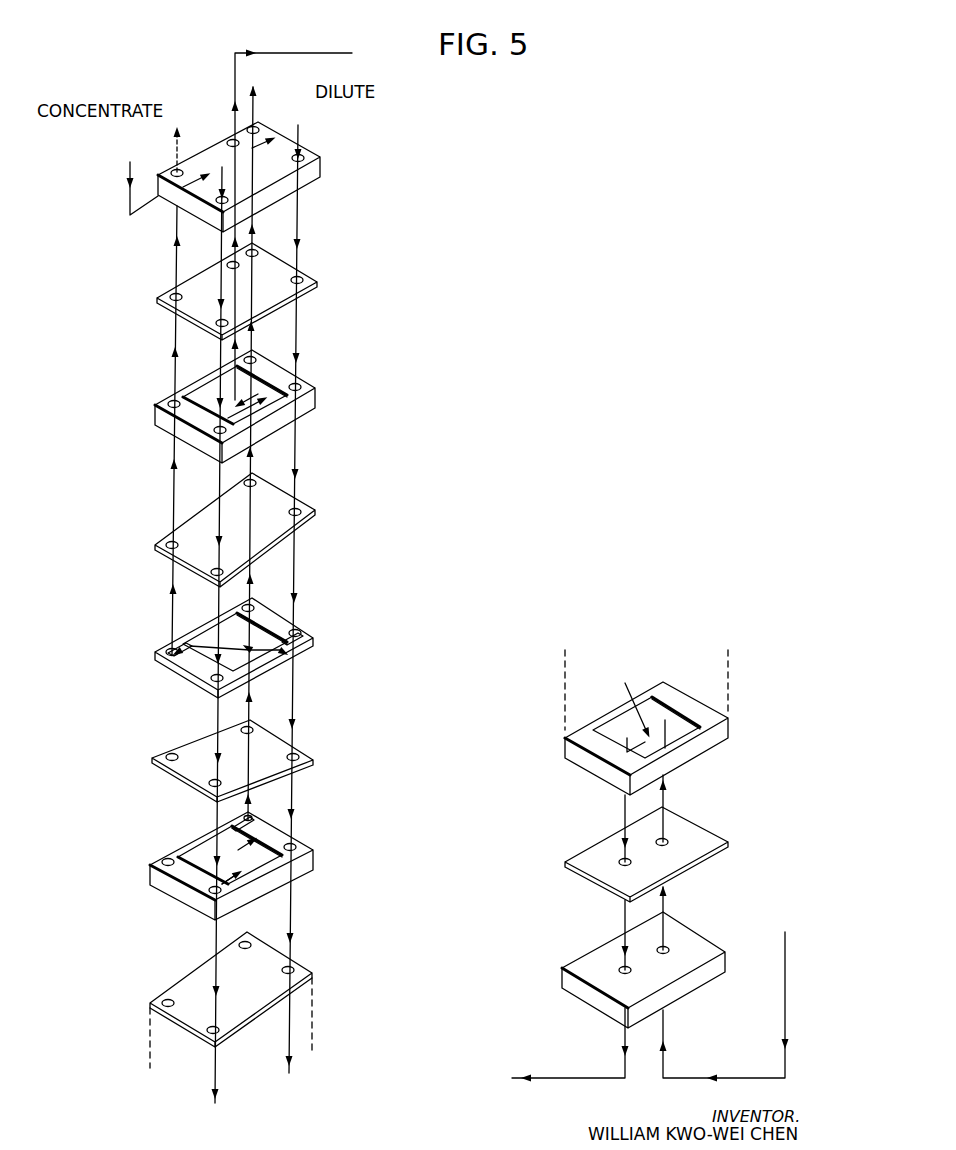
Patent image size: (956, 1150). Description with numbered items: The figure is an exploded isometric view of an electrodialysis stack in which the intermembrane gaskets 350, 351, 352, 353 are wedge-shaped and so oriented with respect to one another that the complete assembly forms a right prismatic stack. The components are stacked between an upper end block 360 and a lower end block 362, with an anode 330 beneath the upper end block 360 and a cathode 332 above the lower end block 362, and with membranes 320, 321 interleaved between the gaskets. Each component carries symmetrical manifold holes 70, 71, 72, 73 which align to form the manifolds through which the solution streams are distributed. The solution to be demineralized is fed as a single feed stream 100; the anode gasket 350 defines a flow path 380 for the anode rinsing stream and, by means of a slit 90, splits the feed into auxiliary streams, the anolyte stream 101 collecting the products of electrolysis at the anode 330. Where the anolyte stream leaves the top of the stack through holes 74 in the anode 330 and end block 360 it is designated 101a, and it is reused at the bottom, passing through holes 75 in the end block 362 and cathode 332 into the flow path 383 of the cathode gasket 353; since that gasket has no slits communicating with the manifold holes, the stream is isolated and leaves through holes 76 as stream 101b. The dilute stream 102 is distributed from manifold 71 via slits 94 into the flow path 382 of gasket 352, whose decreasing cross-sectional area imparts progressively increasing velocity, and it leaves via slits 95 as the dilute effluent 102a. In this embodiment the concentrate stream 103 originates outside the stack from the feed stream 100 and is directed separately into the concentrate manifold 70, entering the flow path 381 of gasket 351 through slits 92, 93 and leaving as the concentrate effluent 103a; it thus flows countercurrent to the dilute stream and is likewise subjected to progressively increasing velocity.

The feed stream 100 is at (130, 168).
The anolyte stream 101 is at (266, 408).
The anolyte stream effluent 101a is at (234, 80).
The catholyte stream effluent 101b is at (623, 1042).
The dilute stream 102 is at (223, 172).
The dilute stream effluent 102a is at (254, 92).
The concentrate stream 103 is at (299, 128).
The concentrate stream effluent 103a is at (172, 582).
The manifold hole 70 is at (302, 156).
The manifold hole 71 is at (220, 204).
The manifold hole 72 is at (258, 128).
The manifold hole 73 is at (175, 170).
The anolyte outlet hole 74 is at (230, 140).
The cathode wash inlet hole 75 is at (669, 843).
The cathode wash outlet hole 76 is at (619, 862).
The slit 90 is at (222, 452).
The slit 92 is at (170, 660).
The slit 93 is at (300, 642).
The slit 94 is at (240, 888).
The slit 95 is at (238, 821).
The membrane 320 is at (301, 524).
The membrane 321 is at (310, 762).
The anode 330 is at (318, 282).
The cathode 332 is at (720, 845).
The intermembrane gasket 350 is at (317, 390).
The intermembrane gasket 351 is at (314, 647).
The intermembrane gasket 352 is at (312, 847).
The intermembrane gasket 353 is at (715, 726).
The end block 360 is at (319, 169).
The end block 362 is at (705, 952).
The flow path 380 is at (290, 398).
The flow path 381 is at (252, 667).
The flow path 382 is at (285, 860).
The flow path 383 is at (656, 701).